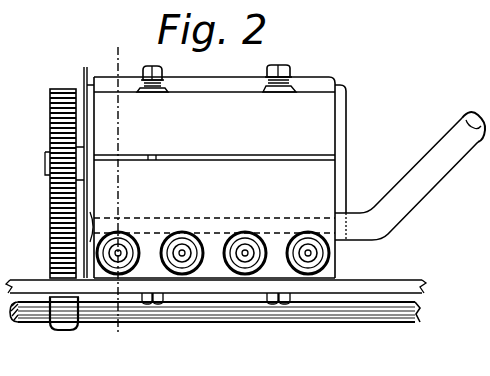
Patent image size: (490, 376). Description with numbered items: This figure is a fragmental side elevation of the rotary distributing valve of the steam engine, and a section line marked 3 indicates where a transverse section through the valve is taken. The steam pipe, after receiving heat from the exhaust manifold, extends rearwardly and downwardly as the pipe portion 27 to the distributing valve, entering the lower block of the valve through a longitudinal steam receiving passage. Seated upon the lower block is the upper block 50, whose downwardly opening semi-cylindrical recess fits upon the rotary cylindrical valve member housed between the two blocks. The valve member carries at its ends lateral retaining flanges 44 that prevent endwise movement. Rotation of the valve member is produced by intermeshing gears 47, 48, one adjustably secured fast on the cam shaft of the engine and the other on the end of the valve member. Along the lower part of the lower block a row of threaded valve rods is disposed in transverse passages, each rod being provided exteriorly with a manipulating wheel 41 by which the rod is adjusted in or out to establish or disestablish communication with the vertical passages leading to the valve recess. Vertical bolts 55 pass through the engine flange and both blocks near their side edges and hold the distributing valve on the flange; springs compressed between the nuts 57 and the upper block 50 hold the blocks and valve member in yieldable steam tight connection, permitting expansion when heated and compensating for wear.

The steam pipe portion 27 is at (432, 177).
The manipulating wheel 41 is at (136, 241).
The lateral retaining flanges 44 is at (84, 66).
The intermeshing gear 47 is at (50, 256).
The intermeshing gear 48 is at (50, 192).
The upper block 50 is at (325, 119).
The vertical bolts 55 is at (280, 66).
The nuts 57 is at (291, 71).
The section line of FIG. 3 is at (126, 47).